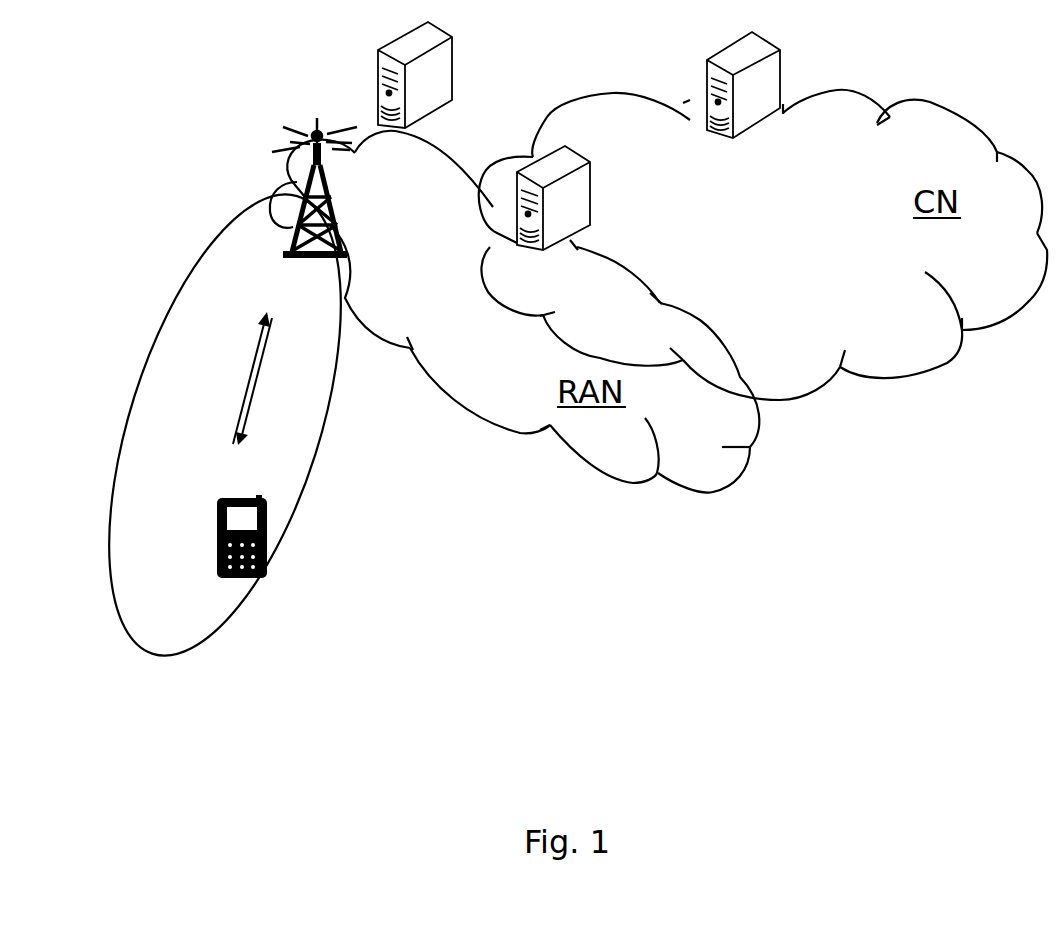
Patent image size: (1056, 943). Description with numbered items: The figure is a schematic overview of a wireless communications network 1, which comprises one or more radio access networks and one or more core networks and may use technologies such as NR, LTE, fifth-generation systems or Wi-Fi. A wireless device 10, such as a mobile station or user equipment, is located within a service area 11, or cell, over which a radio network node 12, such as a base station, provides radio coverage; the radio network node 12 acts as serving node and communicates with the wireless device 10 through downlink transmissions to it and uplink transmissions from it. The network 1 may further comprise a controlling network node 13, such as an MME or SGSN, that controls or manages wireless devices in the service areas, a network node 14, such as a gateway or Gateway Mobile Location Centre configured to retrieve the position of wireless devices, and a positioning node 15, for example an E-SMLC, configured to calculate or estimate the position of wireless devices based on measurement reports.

The wireless communications network 1 is at (238, 98).
The wireless device 10 is at (220, 500).
The service area 11 is at (172, 597).
The radio network node 12 is at (326, 192).
The controlling network node 13 is at (574, 197).
The network node 14 is at (764, 82).
The positioning node 15 is at (436, 73).